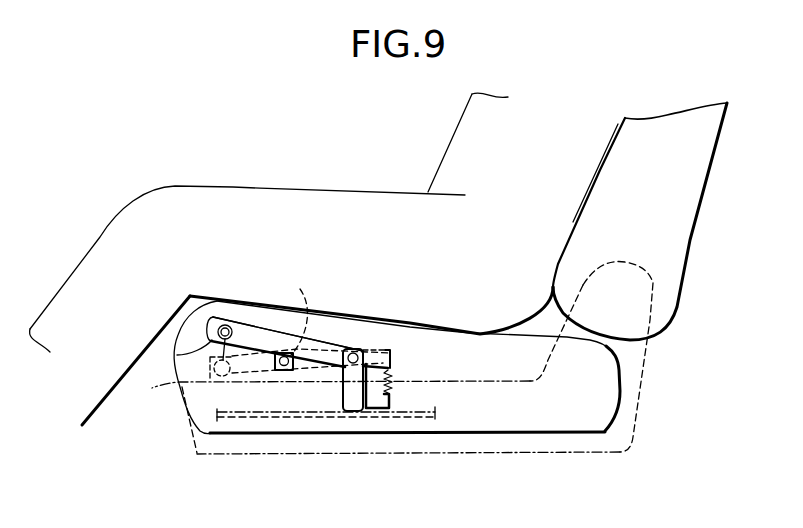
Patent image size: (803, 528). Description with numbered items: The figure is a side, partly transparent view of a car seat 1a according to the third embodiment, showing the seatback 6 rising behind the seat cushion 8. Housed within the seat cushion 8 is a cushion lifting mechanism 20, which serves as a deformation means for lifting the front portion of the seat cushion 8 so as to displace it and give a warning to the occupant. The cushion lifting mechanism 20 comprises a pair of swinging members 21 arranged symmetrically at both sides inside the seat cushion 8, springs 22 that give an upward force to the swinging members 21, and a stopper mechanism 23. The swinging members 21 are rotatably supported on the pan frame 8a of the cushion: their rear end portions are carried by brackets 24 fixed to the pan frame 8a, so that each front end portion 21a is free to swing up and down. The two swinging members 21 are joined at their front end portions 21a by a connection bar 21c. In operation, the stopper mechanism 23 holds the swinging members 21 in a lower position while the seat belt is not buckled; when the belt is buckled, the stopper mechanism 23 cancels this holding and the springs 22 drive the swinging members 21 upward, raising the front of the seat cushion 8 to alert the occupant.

The car seat 1a is at (716, 169).
The seatback 6 is at (683, 218).
The seat cushion 8 is at (453, 341).
The pan frame 8a is at (437, 420).
The cushion lifting mechanism 20 is at (327, 334).
The swinging members 21 is at (264, 335).
The front end portion 21a is at (208, 368).
The connection bar 21c is at (225, 325).
The springs 22 is at (392, 391).
The stopper mechanism 23 is at (290, 372).
The brackets 24 is at (348, 388).